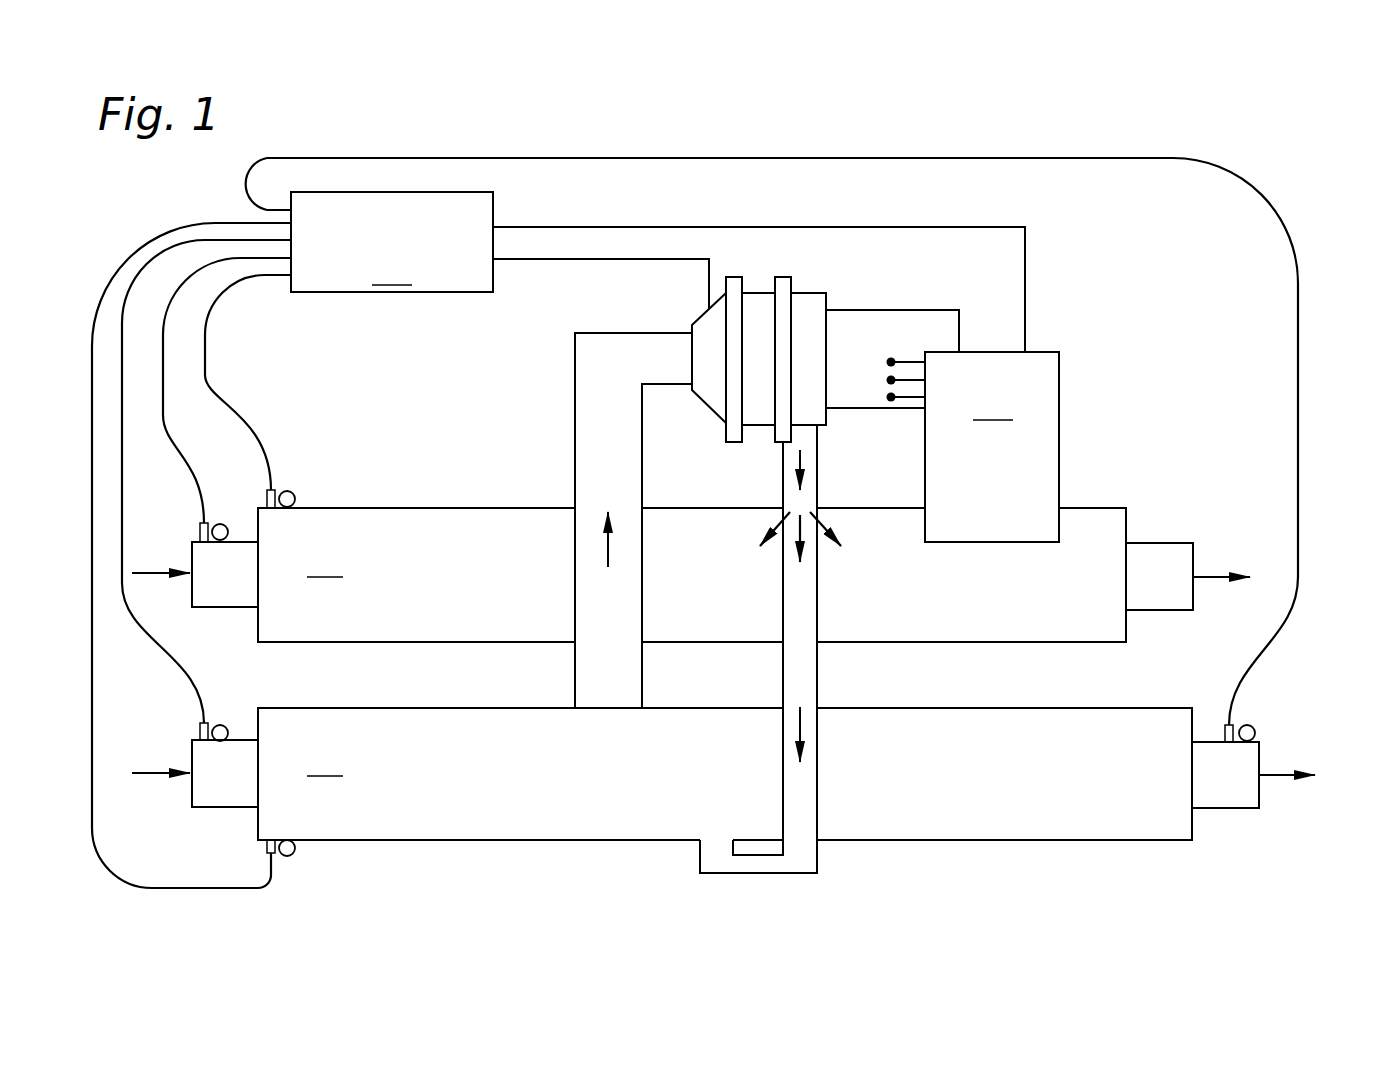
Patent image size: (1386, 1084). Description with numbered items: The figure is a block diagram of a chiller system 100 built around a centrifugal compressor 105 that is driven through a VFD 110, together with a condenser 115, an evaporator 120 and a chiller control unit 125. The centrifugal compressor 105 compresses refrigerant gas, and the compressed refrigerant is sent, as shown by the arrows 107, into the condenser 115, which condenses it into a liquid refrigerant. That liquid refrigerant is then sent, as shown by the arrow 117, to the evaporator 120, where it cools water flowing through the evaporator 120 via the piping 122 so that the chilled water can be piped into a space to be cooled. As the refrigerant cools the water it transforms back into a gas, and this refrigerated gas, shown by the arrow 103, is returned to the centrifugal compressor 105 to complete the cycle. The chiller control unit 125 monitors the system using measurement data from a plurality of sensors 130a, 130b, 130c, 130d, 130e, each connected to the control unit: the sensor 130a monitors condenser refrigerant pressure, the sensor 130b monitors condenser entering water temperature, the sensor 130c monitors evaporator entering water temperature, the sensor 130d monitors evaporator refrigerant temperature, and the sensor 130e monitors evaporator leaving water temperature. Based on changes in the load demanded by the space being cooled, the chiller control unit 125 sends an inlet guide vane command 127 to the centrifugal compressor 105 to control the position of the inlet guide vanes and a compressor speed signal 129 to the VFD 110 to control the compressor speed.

The chiller system 100 is at (1272, 168).
The arrow 103 is at (607, 520).
The centrifugal compressor 105 is at (808, 292).
The arrows 107 is at (798, 557).
The VFD 110 is at (973, 447).
The condenser 115 is at (691, 575).
The arrow 117 is at (802, 722).
The evaporator 120 is at (662, 774).
The piping 122 is at (215, 807).
The chiller control unit 125 is at (392, 242).
The inlet guide vane command 127 is at (643, 262).
The compressor speed signal 129 is at (697, 227).
The sensor 130a is at (291, 490).
The sensor 130b is at (221, 523).
The sensor 130c is at (222, 724).
The sensor 130d is at (292, 856).
The sensor 130e is at (1248, 724).